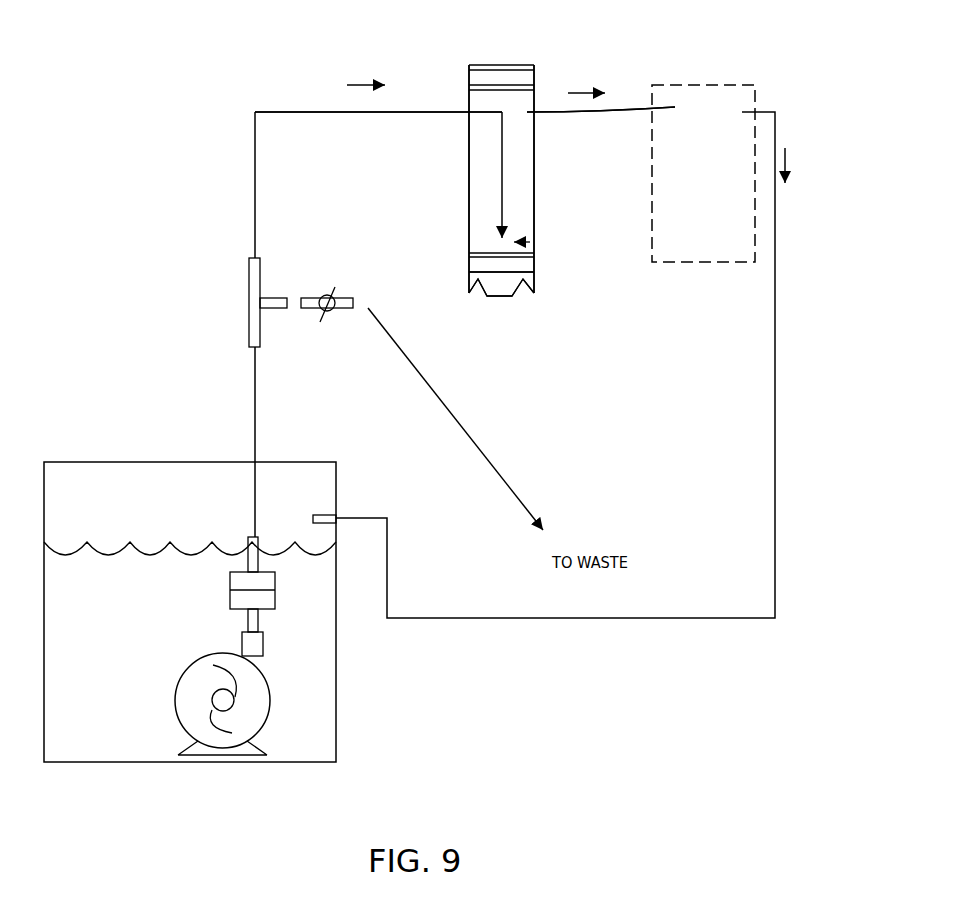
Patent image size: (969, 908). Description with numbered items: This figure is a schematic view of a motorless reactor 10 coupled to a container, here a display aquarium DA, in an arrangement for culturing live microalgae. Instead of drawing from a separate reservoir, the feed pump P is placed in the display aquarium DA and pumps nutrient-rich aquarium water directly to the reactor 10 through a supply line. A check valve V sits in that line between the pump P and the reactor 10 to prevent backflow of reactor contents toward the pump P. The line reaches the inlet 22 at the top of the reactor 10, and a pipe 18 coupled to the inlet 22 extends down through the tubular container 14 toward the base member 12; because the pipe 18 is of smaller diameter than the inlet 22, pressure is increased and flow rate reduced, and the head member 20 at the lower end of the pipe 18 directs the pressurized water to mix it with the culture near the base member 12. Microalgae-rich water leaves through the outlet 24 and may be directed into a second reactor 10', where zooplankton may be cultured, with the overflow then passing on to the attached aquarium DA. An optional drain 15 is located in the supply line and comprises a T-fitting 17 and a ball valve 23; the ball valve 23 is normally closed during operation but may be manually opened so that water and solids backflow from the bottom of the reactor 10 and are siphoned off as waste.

The motorless reactor 10 is at (479, 180).
The second reactor 10' is at (725, 148).
The base member 12 is at (534, 275).
The tubular container 14 is at (534, 140).
The drain 15 is at (221, 279).
The T-fitting 17 is at (260, 282).
The pipe 18 is at (502, 175).
The head member 20 is at (530, 242).
The inlet 22 is at (451, 119).
The ball valve 23 is at (310, 310).
The outlet 24 is at (550, 88).
The check valve V is at (275, 588).
The feed pump P is at (176, 703).
The display aquarium DA is at (113, 622).